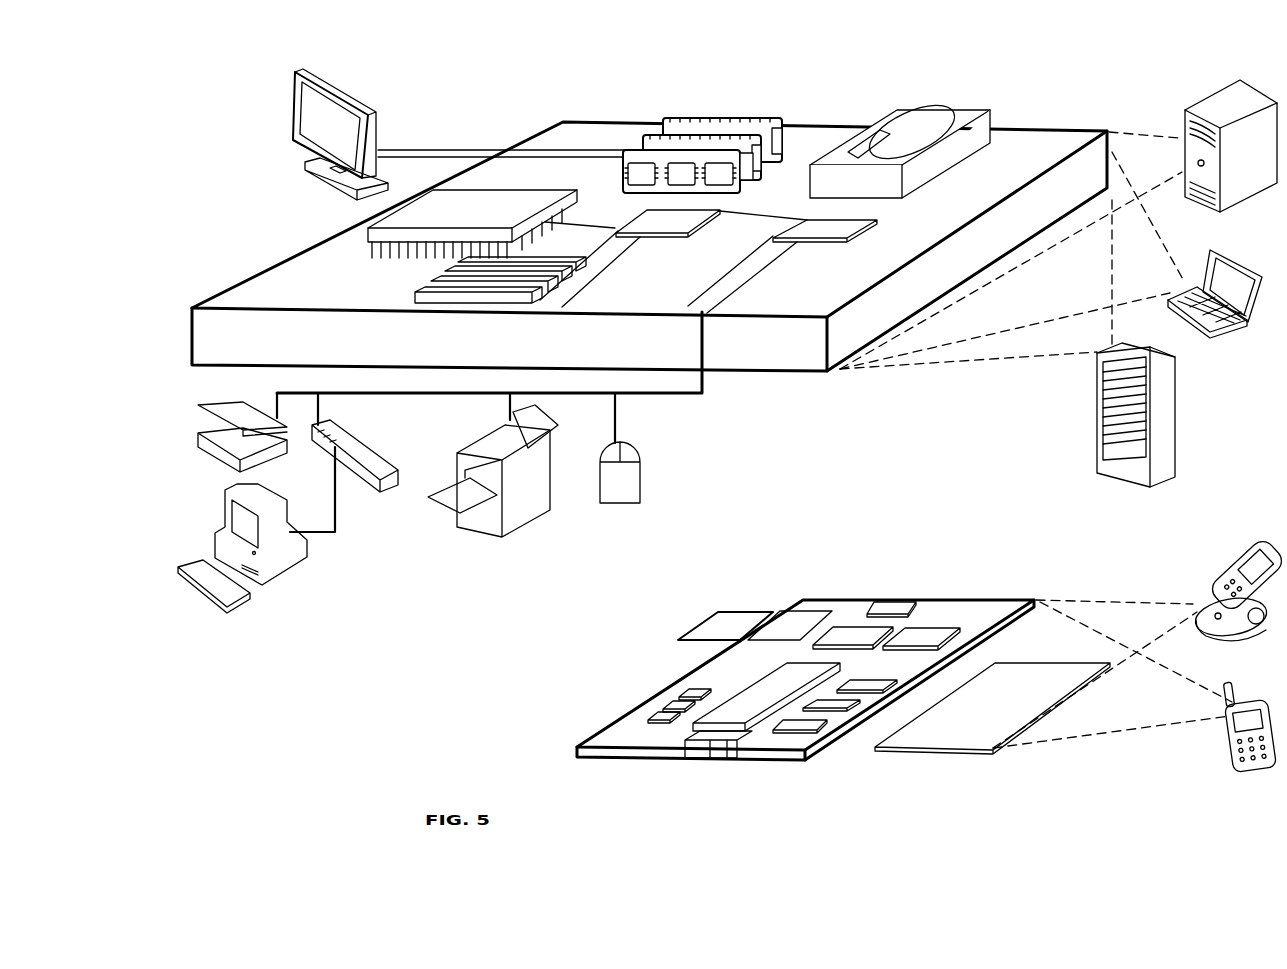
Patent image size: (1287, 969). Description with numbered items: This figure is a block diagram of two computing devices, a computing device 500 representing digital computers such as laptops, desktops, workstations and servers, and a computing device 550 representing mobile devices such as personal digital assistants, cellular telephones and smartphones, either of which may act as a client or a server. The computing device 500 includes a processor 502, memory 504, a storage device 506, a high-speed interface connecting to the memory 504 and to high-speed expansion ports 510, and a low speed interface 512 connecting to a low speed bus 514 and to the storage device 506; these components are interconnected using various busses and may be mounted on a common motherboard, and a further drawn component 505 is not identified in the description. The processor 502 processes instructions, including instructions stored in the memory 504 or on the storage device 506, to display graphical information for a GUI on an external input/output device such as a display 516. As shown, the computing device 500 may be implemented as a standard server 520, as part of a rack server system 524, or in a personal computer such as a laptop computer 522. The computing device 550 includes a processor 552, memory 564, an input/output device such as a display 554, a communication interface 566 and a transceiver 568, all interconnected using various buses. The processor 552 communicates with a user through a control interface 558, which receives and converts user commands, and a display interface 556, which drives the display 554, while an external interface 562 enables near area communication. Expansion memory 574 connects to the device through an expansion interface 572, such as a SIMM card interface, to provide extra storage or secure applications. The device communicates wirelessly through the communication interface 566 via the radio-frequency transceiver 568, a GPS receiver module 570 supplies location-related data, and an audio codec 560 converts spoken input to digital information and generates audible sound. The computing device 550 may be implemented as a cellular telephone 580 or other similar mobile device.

The computing device 500 is at (487, 92).
The processor 502 is at (366, 236).
The memory 504 is at (682, 132).
The memory socket 505 is at (640, 218).
The storage device 506 is at (898, 114).
The high-speed expansion ports 510 is at (432, 282).
The low speed interface 512 is at (818, 236).
The low speed bus 514 is at (703, 316).
The display 516 is at (296, 80).
The standard server 520 is at (1181, 112).
The laptop computer 522 is at (1209, 252).
The rack server system 524 is at (1094, 438).
The computing device 550 is at (789, 578).
The processor 552 is at (752, 738).
The display 554 is at (992, 751).
The display interface 556 is at (814, 758).
The control interface 558 is at (848, 712).
The audio codec 560 is at (866, 694).
The external interface 562 is at (712, 754).
The memory 564 is at (660, 714).
The communication interface 566 is at (850, 637).
The transceiver 568 is at (925, 634).
The GPS receiver module 570 is at (888, 602).
The expansion interface 572 is at (792, 612).
The expansion memory 574 is at (720, 611).
The cellular telephone 580 is at (1250, 548).